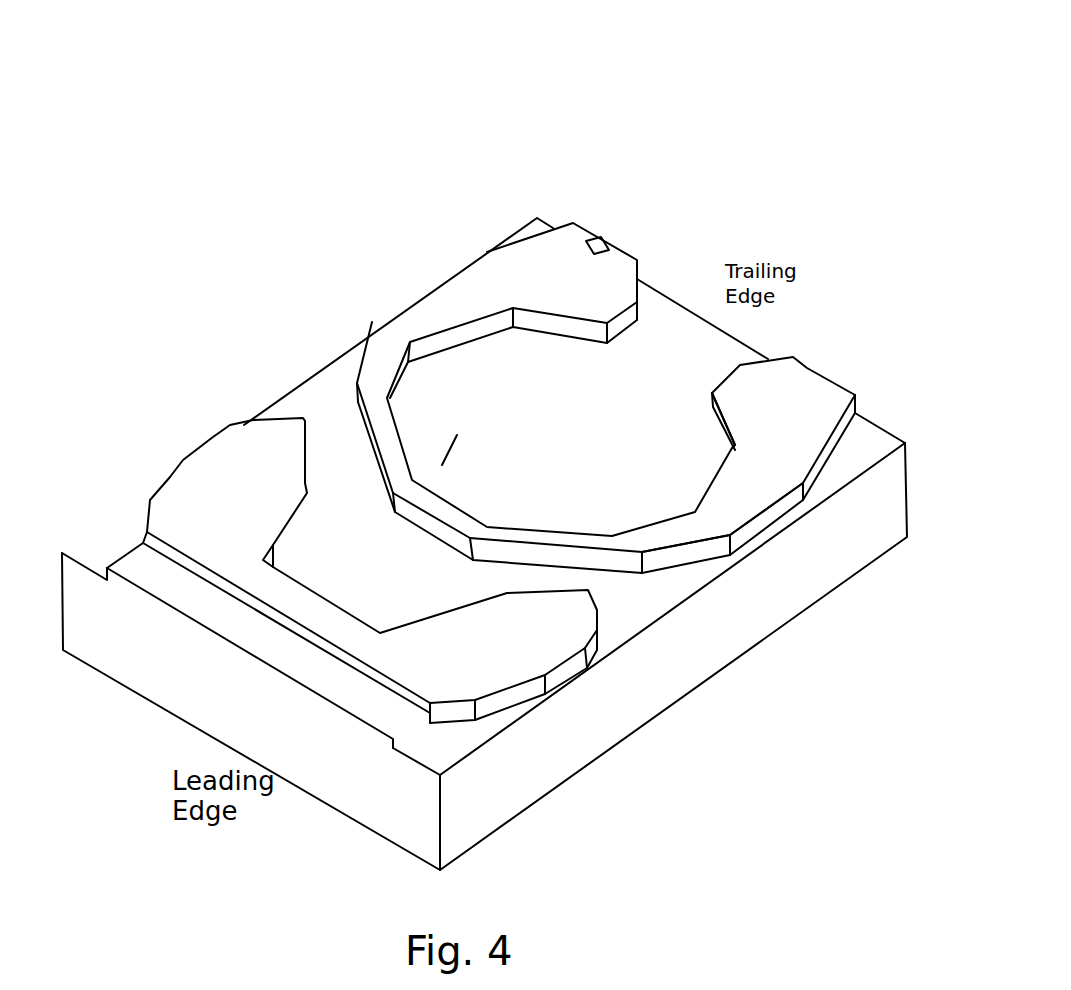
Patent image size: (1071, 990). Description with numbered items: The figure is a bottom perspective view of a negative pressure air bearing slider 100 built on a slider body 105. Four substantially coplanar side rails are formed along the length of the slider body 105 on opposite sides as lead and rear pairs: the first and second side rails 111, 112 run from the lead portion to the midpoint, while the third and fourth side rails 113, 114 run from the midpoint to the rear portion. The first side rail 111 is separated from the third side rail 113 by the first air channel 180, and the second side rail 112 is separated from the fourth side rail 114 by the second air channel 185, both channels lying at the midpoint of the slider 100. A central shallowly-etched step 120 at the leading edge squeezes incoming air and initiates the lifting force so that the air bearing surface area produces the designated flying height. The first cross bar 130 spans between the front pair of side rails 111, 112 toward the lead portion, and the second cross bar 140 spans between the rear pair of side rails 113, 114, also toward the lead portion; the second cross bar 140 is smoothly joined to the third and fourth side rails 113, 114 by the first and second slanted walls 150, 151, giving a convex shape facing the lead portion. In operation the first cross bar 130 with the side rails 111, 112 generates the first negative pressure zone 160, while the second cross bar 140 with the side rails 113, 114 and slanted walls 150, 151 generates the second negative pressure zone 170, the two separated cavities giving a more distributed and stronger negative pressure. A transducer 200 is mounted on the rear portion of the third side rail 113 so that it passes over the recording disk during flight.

The slider 100 is at (707, 127).
The slider body 105 is at (783, 637).
The first side rail 111 is at (233, 480).
The second side rail 112 is at (518, 637).
The third side rail 113 is at (510, 282).
The fourth side rail 114 is at (768, 413).
The central shallowly-etched step 120 is at (253, 630).
The first cross bar 130 is at (327, 622).
The second cross bar 140 is at (445, 513).
The first slanted wall 150 is at (373, 380).
The second slanted wall 151 is at (657, 537).
The first negative pressure zone 160 is at (323, 573).
The second negative pressure zone 170 is at (517, 460).
The first air channel 180 is at (337, 455).
The second air channel 185 is at (570, 579).
The transducer 200 is at (600, 238).